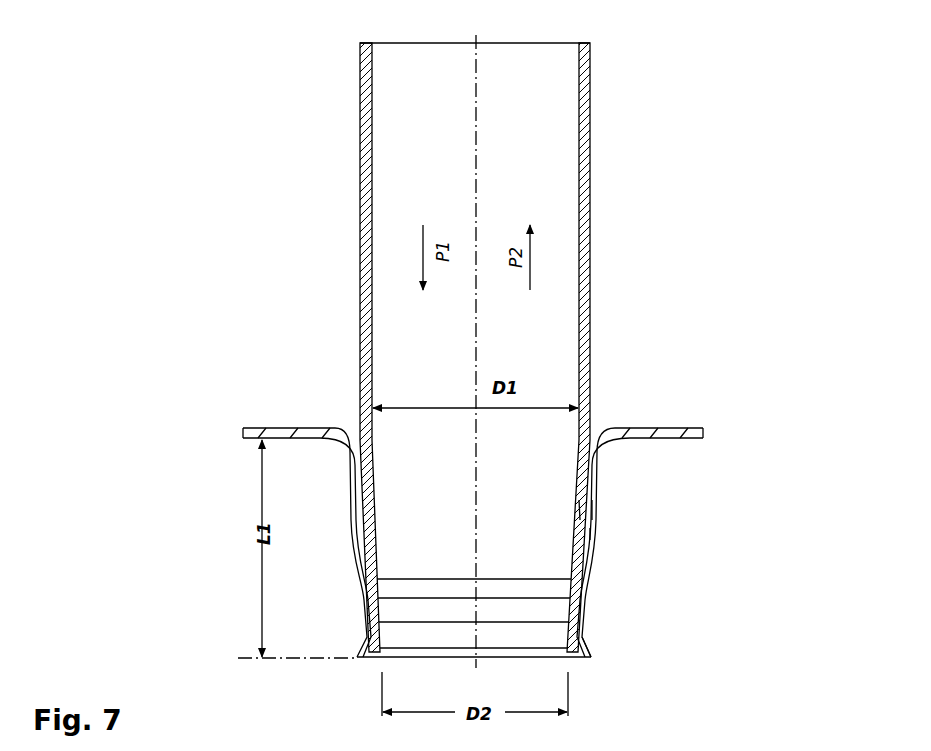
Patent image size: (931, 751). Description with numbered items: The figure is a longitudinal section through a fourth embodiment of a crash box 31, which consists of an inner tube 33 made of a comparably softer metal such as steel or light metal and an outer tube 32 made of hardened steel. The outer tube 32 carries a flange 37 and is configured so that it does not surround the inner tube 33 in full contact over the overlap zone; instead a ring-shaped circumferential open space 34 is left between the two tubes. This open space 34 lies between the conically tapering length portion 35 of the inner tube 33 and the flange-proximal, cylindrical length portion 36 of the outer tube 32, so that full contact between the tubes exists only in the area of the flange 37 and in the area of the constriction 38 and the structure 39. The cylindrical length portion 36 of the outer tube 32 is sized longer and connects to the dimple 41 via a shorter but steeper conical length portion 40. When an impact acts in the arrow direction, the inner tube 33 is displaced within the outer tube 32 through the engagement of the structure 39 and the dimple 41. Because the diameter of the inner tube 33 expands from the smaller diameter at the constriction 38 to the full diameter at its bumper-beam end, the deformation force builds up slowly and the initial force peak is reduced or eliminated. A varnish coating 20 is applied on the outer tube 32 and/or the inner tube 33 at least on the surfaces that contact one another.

The varnish coating 20 is at (388, 598).
The crash box 31 is at (742, 360).
The outer tube 32 is at (646, 522).
The inner tube 33 is at (600, 303).
The open space 34 is at (596, 516).
The conically tapering length portion 35 is at (577, 512).
The flange-proximal length portion 36 is at (596, 531).
The flange 37 is at (686, 426).
The constriction 38 is at (560, 622).
The structure 39 is at (613, 616).
The conical length portion 40 is at (591, 561).
The dimple 41 is at (592, 604).